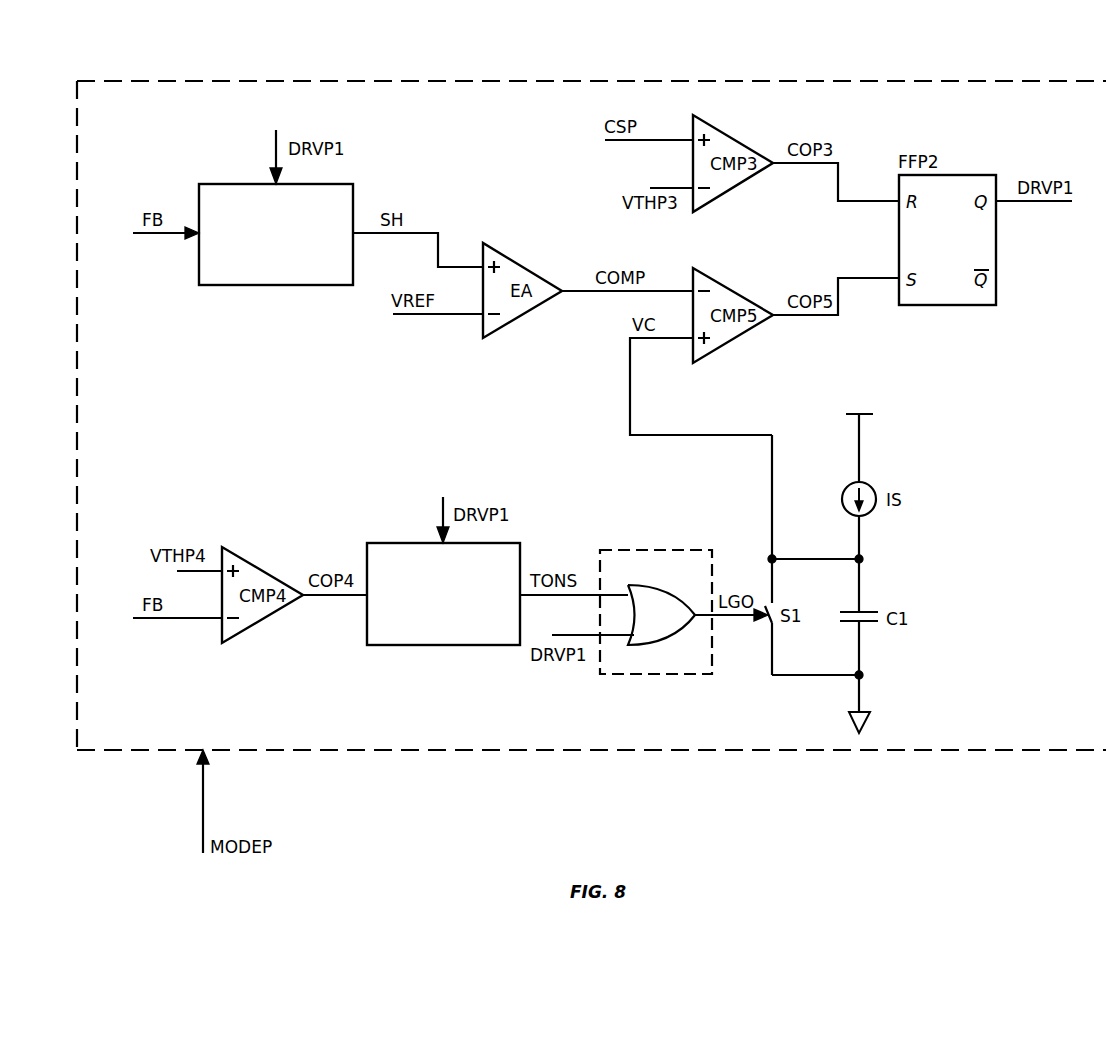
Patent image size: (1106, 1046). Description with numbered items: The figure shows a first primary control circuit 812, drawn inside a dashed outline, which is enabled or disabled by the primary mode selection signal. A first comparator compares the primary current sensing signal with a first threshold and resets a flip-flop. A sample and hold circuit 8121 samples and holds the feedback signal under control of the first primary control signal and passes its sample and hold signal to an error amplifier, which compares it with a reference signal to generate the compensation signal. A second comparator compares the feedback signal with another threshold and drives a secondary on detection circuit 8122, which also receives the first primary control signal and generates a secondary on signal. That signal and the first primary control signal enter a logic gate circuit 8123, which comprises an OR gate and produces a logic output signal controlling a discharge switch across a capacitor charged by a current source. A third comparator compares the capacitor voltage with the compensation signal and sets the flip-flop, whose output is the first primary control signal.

The first primary control circuit 812 is at (1011, 81).
The sample and hold circuit 8121 is at (231, 285).
The secondary on detection circuit 8122 is at (403, 645).
The logic gate circuit 8123 is at (622, 674).